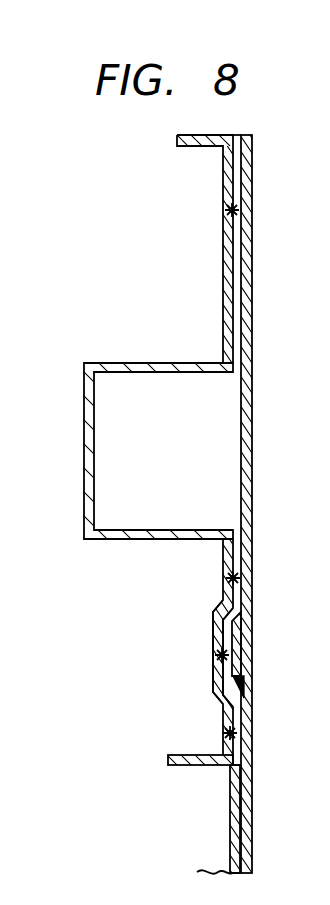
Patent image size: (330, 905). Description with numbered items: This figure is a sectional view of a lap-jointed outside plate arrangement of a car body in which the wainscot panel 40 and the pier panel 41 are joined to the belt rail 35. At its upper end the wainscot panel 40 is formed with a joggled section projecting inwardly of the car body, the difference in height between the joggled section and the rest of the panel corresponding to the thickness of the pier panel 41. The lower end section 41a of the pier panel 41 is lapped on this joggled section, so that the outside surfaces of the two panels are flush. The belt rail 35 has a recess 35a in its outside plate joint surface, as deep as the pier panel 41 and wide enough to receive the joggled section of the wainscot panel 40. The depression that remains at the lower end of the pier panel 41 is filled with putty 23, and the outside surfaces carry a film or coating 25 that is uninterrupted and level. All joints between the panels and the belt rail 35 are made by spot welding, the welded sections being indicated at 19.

The joined section by spot welding 19 is at (230, 210).
The fill putty 23 is at (250, 693).
The film or coating 25 is at (253, 773).
The belt rail 35 is at (84, 425).
The recess 35a is at (213, 680).
The wainscot panel 40 is at (240, 677).
The pier panel 41 is at (242, 383).
The lower end section of the pier panel 41a is at (240, 658).